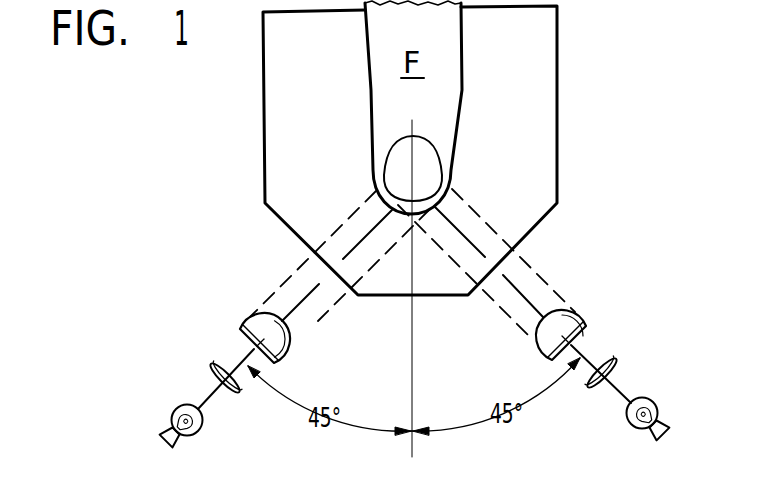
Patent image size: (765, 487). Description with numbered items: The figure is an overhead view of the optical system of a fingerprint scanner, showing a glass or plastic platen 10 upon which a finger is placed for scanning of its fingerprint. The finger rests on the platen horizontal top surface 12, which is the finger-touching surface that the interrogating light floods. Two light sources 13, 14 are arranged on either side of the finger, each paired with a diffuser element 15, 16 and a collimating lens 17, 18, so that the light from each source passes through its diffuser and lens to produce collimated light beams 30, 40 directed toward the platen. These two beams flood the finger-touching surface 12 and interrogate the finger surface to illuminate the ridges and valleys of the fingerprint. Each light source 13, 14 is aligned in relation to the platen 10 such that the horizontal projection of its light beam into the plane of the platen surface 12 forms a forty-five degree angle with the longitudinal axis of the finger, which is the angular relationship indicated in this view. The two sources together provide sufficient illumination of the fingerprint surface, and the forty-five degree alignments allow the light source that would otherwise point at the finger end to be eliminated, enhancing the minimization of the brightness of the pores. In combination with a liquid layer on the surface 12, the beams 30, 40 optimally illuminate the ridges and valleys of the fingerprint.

The platen 10 is at (438, 150).
The platen horizontal top surface 12 is at (536, 128).
The light source 13 is at (172, 415).
The light source 14 is at (651, 401).
The diffuser element 15 is at (220, 368).
The diffuser element 16 is at (618, 363).
The collimating lens 17 is at (258, 315).
The collimating lens 18 is at (570, 308).
The collimated light beam 30 is at (323, 323).
The collimated light beam 40 is at (545, 278).